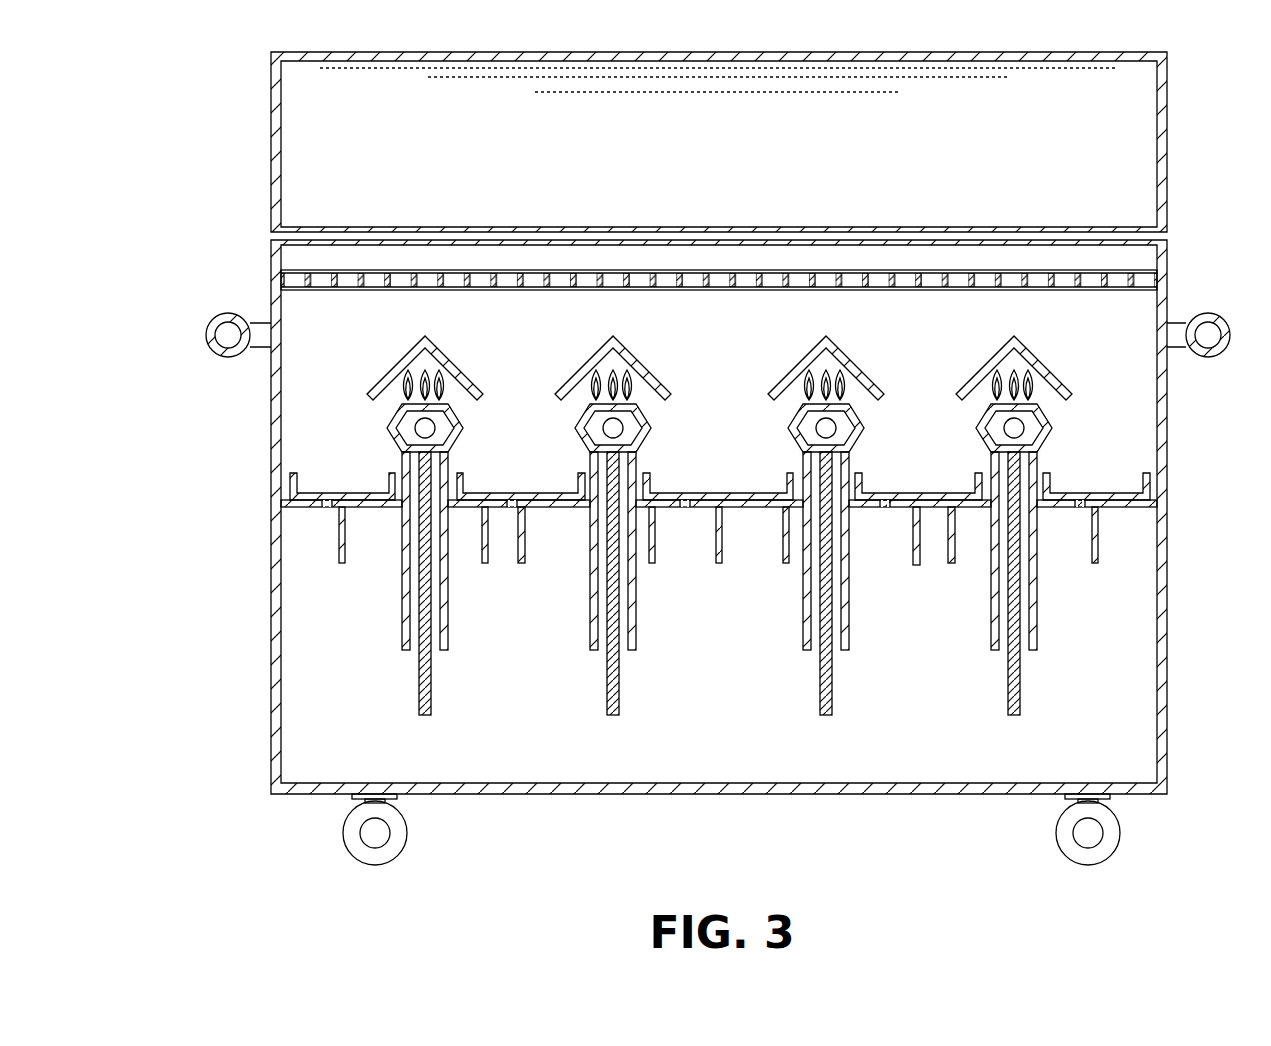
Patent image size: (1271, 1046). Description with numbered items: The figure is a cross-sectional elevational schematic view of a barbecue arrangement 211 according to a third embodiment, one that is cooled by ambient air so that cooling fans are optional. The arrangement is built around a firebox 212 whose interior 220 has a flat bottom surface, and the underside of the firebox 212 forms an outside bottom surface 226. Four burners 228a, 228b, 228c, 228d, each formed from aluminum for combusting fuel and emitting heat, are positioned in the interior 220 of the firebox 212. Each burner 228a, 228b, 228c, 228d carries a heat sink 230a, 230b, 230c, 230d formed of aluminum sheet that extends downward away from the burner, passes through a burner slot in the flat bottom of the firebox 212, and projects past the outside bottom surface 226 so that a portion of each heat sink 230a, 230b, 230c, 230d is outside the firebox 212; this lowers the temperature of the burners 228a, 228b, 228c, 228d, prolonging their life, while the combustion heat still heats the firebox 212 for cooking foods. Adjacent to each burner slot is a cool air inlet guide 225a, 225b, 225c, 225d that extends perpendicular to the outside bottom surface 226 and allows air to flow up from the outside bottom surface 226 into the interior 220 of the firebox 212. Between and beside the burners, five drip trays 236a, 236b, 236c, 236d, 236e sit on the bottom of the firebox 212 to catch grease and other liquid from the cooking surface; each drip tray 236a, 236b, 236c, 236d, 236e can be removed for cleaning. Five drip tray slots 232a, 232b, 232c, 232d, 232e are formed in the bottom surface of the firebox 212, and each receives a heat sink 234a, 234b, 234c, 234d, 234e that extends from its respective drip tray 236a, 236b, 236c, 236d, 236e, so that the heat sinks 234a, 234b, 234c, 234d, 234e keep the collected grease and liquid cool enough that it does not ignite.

The barbecue arrangement 211 is at (165, 153).
The firebox 212 is at (248, 420).
The interior 220 is at (925, 325).
The outside bottom surface 226 is at (1128, 513).
The cool air inlet guide 225a is at (390, 632).
The cool air inlet guide 225b is at (578, 632).
The cool air inlet guide 225c is at (790, 632).
The cool air inlet guide 225d is at (978, 632).
The burner 228a is at (448, 408).
The burner 228b is at (636, 408).
The burner 228c is at (849, 408).
The burner 228d is at (1037, 408).
The heat sink 230a is at (418, 688).
The heat sink 230b is at (606, 688).
The heat sink 230c is at (818, 688).
The heat sink 230d is at (1006, 688).
The drip tray slot 232a is at (327, 507).
The drip tray slot 232b is at (512, 507).
The drip tray slot 232c is at (685, 507).
The drip tray slot 232d is at (885, 507).
The drip tray slot 232e is at (1080, 507).
The heat sink 234a is at (345, 540).
The heat sink 234b is at (527, 545).
The heat sink 234c is at (725, 545).
The heat sink 234d is at (922, 545).
The heat sink 234e is at (1103, 543).
The drip tray 236a is at (322, 492).
The drip tray 236b is at (505, 492).
The drip tray 236c is at (690, 492).
The drip tray 236d is at (905, 492).
The drip tray 236e is at (1090, 492).